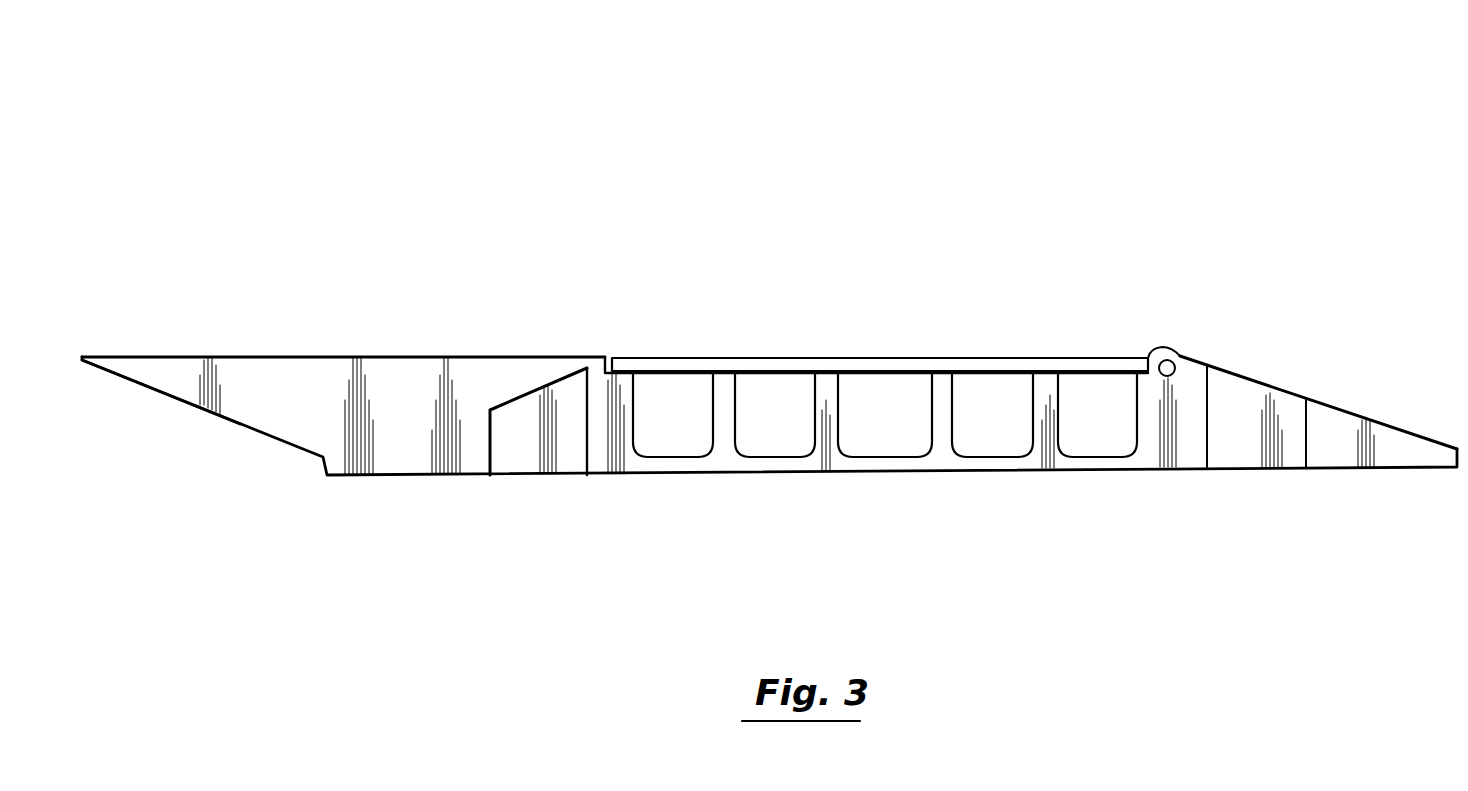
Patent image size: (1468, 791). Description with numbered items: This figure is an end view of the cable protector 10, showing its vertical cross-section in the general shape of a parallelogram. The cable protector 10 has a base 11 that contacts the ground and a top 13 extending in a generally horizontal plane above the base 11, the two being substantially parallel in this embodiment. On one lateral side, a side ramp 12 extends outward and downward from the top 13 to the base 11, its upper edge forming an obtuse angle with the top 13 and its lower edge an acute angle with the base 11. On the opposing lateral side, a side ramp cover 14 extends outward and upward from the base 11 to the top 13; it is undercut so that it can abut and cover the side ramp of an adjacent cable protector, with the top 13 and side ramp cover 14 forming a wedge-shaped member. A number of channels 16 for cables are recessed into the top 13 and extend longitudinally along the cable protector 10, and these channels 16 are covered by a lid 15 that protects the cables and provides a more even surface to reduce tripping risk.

The cable protector 10 is at (545, 255).
The base 11 is at (615, 473).
The side ramp 12 is at (1342, 415).
The top 13 is at (388, 352).
The side ramp cover 14 is at (222, 413).
The lid 15 is at (867, 357).
The channels 16 is at (773, 423).